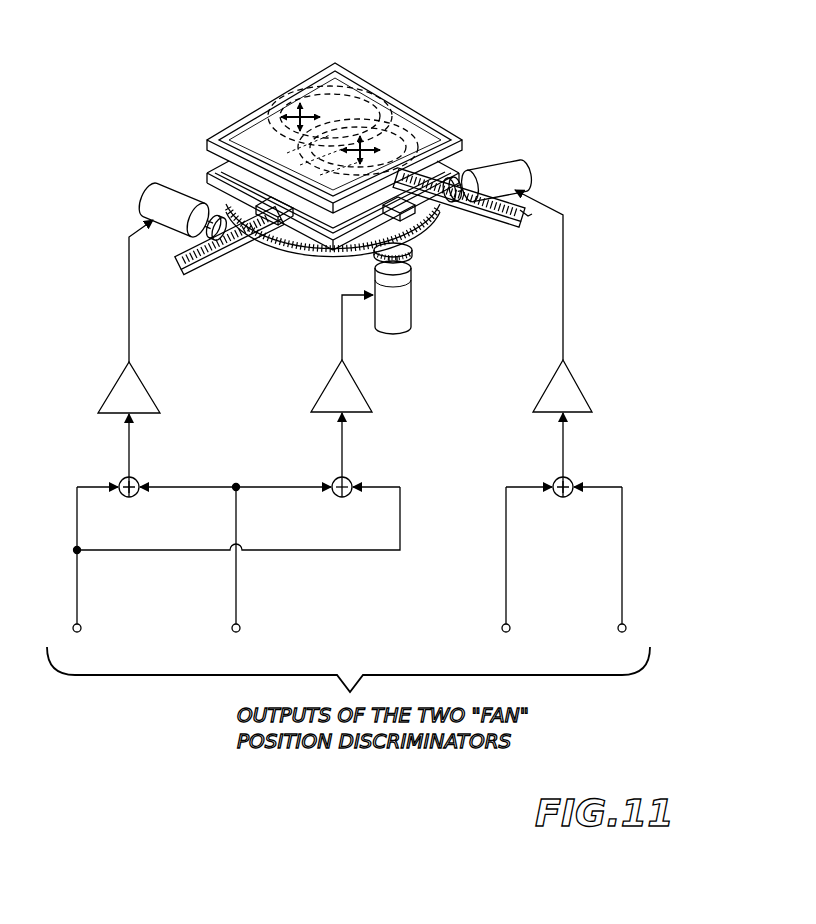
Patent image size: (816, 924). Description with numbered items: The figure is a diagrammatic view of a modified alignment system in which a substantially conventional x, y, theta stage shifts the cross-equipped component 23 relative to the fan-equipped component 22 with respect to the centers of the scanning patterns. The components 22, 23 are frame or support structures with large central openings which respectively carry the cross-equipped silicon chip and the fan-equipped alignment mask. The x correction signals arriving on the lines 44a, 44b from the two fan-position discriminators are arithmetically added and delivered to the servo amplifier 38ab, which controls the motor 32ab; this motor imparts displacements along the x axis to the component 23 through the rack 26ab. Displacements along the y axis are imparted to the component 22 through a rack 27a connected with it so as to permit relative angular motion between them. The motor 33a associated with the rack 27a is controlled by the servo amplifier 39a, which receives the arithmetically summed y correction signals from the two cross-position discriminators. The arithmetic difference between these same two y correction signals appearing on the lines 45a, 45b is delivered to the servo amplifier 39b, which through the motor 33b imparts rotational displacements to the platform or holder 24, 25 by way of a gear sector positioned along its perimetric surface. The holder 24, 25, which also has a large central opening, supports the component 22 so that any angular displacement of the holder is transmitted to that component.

The fan-equipped component 22 is at (206, 172).
The cross-equipped component 23 is at (370, 81).
The rack 27a is at (207, 258).
The platform or holder 24 is at (454, 214).
The platform or holder 25 is at (426, 222).
The rack 26ab is at (512, 226).
The motor 33a is at (150, 198).
The motor 32ab is at (508, 152).
The motor 33b is at (412, 302).
The servo amplifier 39a is at (140, 388).
The servo amplifier 39b is at (358, 392).
The servo amplifier 38ab is at (574, 388).
The line 45a is at (80, 606).
The line 45b is at (238, 606).
The line 44a is at (505, 586).
The line 44b is at (623, 560).